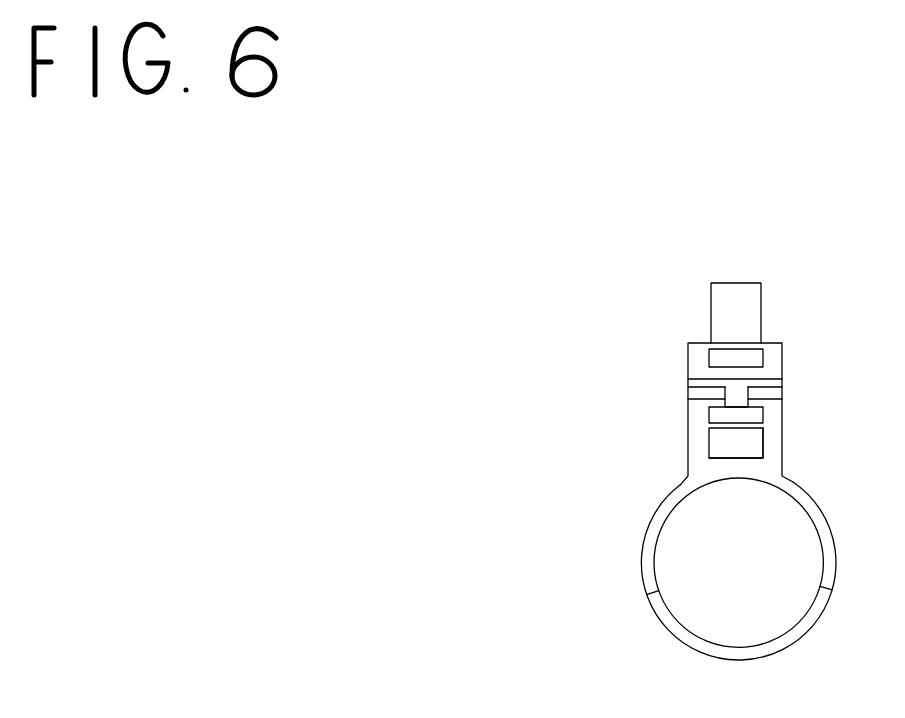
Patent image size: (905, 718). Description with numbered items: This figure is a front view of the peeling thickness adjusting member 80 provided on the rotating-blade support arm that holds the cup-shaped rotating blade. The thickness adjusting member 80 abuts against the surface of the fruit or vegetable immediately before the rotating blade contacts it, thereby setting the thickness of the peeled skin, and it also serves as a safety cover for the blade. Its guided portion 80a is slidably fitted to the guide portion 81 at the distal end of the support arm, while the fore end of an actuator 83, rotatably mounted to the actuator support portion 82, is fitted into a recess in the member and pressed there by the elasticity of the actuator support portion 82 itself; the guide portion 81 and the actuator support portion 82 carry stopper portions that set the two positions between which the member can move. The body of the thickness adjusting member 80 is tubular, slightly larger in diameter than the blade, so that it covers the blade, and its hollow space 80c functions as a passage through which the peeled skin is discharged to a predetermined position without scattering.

The thickness adjusting member 80 is at (686, 467).
The guided portion 80a is at (749, 457).
The hollow space 80c is at (677, 561).
The guide portion 81 is at (719, 453).
The actuator support portion 82 is at (775, 359).
The actuator 83 is at (753, 304).